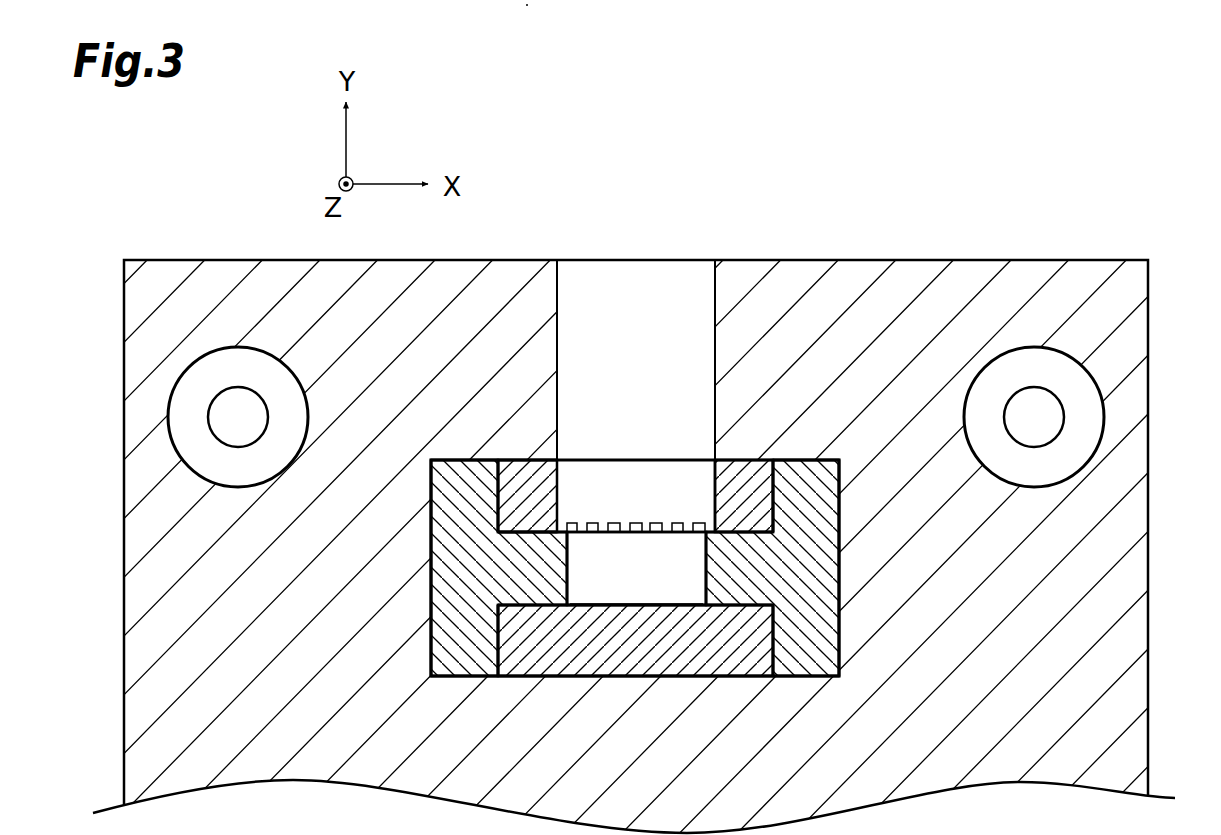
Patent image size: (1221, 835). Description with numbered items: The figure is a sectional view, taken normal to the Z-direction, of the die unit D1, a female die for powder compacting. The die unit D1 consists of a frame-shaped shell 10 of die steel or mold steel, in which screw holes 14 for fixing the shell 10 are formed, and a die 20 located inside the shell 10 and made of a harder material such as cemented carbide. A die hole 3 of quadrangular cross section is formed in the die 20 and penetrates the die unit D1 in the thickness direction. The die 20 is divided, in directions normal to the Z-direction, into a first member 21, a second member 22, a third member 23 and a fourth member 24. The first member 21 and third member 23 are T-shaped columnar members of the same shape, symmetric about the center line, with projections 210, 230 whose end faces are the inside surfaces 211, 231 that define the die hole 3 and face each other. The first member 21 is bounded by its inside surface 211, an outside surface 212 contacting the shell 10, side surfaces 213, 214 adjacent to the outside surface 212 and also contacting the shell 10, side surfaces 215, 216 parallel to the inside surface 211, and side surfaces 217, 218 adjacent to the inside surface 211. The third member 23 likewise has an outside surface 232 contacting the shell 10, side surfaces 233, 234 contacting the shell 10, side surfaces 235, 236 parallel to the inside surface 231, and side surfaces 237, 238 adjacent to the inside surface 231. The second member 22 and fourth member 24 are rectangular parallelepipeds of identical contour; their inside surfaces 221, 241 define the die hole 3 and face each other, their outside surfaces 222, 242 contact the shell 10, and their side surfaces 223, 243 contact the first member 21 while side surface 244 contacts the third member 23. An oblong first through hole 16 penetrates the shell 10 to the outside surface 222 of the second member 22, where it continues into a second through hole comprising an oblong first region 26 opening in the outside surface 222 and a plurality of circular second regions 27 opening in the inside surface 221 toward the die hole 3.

The die unit D1 is at (975, 192).
The shell 10 is at (870, 259).
The screw holes 14 is at (168, 417).
The first through hole 16 is at (716, 343).
The die 20 is at (452, 679).
The first member 21 is at (520, 600).
The second member 22 is at (755, 468).
The third member 23 is at (833, 574).
The fourth member 24 is at (612, 663).
The first region 26 is at (710, 477).
The second regions 27 is at (685, 521).
The die hole 3 is at (583, 595).
The projection 210 is at (567, 555).
The projection 230 is at (706, 578).
The inside surface 211 is at (565, 583).
The outside surface 212 is at (428, 553).
The side surface 213 is at (465, 462).
The side surface 214 is at (463, 672).
The side surface 215 is at (497, 506).
The side surface 216 is at (497, 647).
The side surface 217 is at (510, 533).
The side surface 218 is at (495, 628).
The inside surface 221 is at (525, 528).
The outside surface 222 is at (547, 457).
The side surface 223 is at (500, 497).
The inside surface 231 is at (708, 557).
The outside surface 232 is at (843, 512).
The side surface 233 is at (810, 465).
The side surface 234 is at (800, 671).
The side surface 235 is at (775, 488).
The side surface 236 is at (775, 628).
The side surface 237 is at (841, 548).
The side surface 238 is at (752, 603).
The inside surface 241 is at (658, 608).
The outside surface 242 is at (717, 679).
The side surface 243 is at (500, 648).
The side surface 244 is at (768, 652).